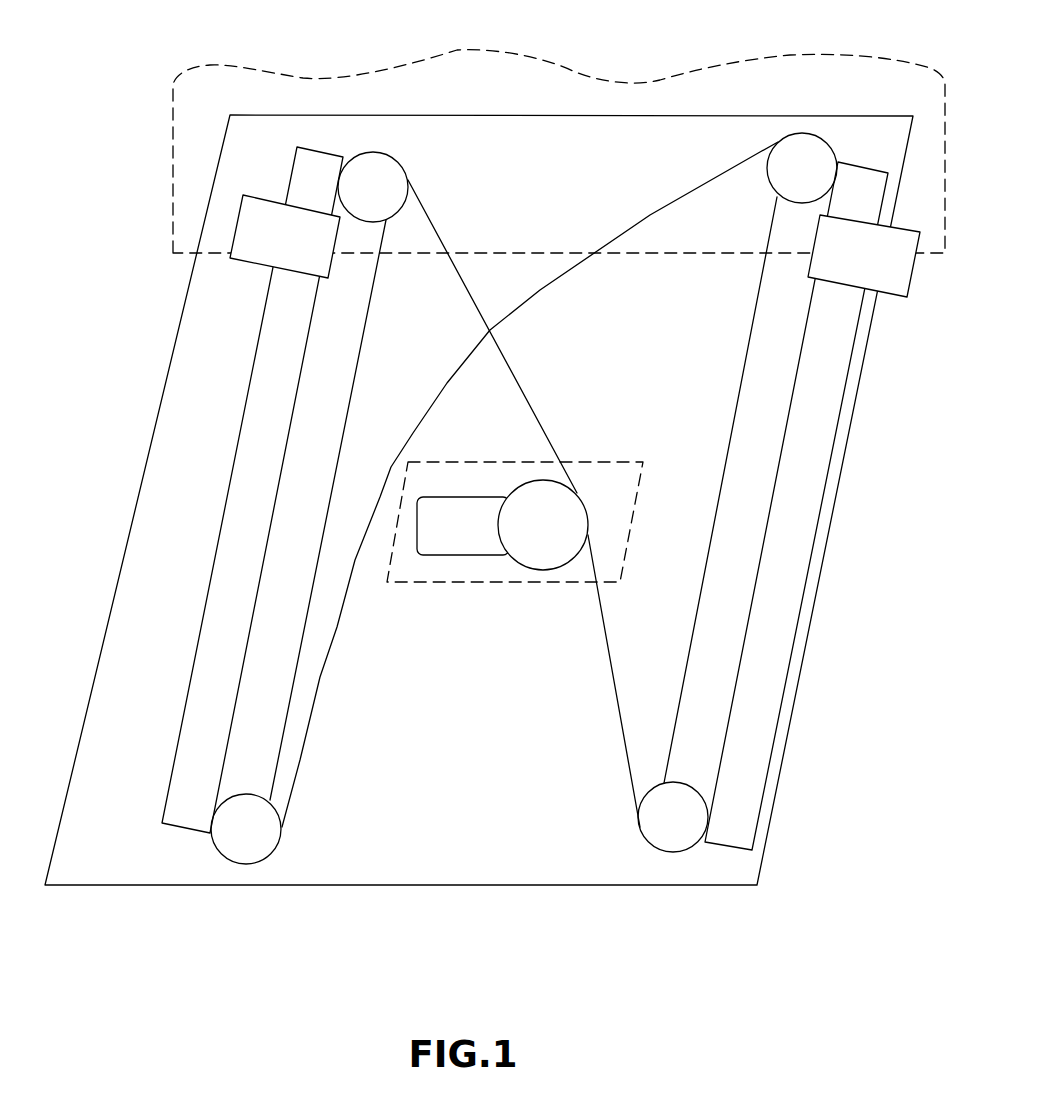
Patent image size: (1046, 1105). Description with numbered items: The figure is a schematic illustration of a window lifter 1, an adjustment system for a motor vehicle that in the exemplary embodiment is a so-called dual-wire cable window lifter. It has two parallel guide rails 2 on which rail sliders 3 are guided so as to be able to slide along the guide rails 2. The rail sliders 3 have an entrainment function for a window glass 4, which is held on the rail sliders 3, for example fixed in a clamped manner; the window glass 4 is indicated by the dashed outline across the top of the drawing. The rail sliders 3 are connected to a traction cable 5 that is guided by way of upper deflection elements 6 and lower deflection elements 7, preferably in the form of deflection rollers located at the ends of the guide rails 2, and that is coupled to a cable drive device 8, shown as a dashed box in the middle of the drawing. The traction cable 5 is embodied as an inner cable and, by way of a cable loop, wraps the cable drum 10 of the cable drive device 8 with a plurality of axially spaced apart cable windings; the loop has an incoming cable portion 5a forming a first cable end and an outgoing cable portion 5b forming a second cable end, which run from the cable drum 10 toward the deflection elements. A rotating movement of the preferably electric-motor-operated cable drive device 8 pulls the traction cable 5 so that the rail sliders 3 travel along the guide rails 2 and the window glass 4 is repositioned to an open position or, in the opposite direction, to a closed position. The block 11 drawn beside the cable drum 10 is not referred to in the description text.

The window lifter 1 is at (106, 331).
The guide rails 2 is at (228, 480).
The rail sliders 3 is at (256, 247).
The window glass 4 is at (656, 107).
The traction cable 5 is at (650, 215).
The incoming cable portion 5a is at (527, 390).
The outgoing cable portion 5b is at (617, 700).
The upper deflection elements 6 is at (373, 177).
The lower deflection elements 7 is at (263, 833).
The cable drive device 8 is at (604, 462).
The cable drum 10 is at (557, 543).
The motor 11 is at (457, 553).